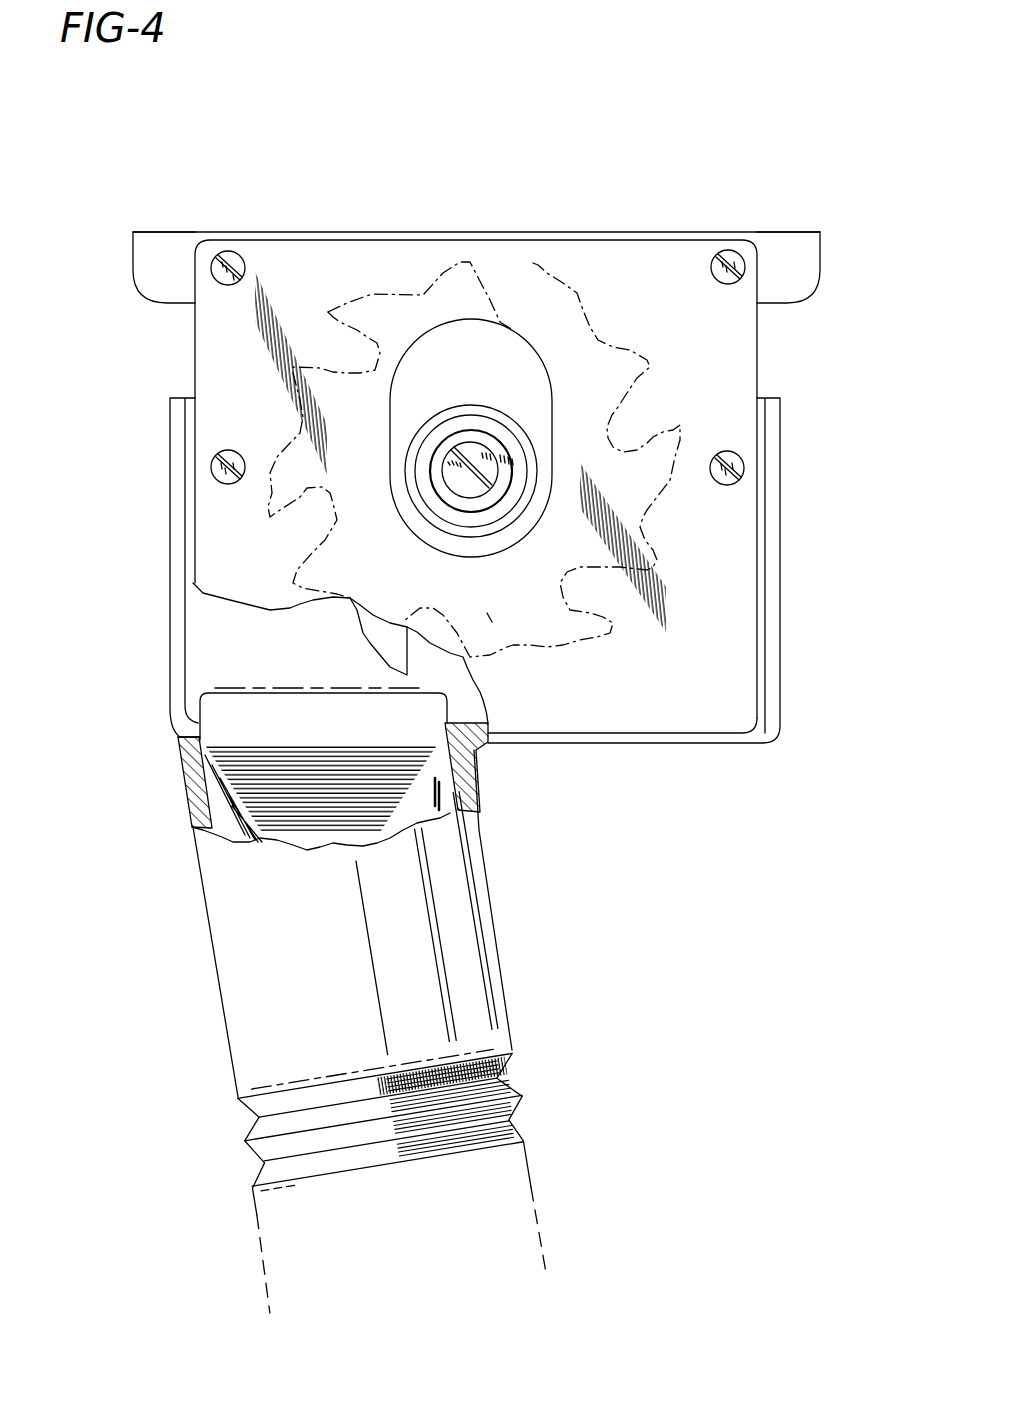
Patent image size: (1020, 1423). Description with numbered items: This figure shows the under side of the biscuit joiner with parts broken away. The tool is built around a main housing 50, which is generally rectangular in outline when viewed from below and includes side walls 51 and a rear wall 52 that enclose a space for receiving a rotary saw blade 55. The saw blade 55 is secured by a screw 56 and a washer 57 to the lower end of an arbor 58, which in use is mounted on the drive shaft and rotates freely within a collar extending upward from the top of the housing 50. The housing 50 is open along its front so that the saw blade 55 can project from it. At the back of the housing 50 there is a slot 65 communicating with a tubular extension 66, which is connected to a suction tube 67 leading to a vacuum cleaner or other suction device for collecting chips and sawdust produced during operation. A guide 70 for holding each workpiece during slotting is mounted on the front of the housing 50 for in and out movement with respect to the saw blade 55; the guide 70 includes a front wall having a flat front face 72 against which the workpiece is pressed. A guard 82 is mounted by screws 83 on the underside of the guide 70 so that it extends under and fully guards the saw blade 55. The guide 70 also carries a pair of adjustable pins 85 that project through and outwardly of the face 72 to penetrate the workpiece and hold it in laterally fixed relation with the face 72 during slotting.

The main housing 50 is at (483, 477).
The side walls 51 is at (168, 520).
The rear wall 52 is at (566, 742).
The rotary saw blade 55 is at (370, 643).
The screw 56 is at (493, 490).
The washer 57 is at (513, 450).
The arbor 58 is at (468, 405).
The slot 65 is at (215, 718).
The tubular extension 66 is at (483, 886).
The suction tube 67 is at (522, 1108).
The guide 70 is at (805, 235).
The flat front face 72 is at (447, 232).
The guard 82 is at (203, 582).
The screws 83 is at (228, 452).
The adjustable pins 85 is at (166, 230).